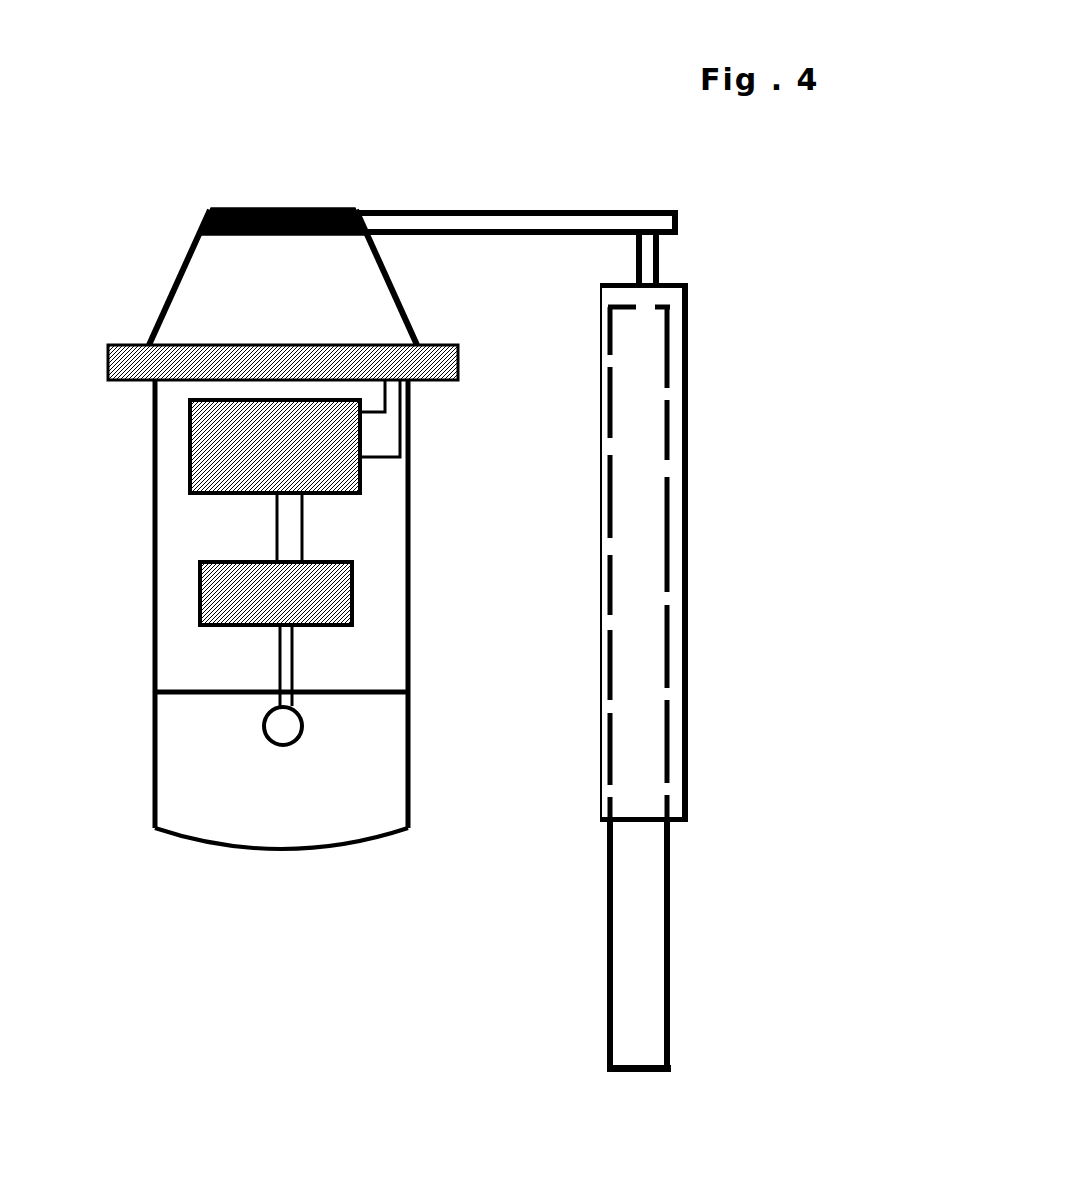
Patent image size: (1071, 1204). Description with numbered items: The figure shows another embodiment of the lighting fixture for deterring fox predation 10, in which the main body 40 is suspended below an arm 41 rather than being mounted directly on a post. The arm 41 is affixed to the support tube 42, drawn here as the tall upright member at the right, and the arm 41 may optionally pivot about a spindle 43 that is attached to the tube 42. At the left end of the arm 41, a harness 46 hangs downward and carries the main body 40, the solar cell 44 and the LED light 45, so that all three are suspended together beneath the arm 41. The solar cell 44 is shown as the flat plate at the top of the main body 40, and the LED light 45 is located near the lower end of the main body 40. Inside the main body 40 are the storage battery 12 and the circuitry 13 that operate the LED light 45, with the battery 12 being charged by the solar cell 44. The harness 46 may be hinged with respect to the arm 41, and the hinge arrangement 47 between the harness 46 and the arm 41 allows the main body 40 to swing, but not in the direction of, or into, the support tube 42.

The lighting fixture for deterring fox predation 10 is at (467, 85).
The storage battery 12 is at (330, 493).
The circuitry 13 is at (352, 585).
The main body 40 is at (152, 543).
The arm 41 is at (475, 207).
The support tube 42 is at (688, 403).
The spindle 43 is at (660, 257).
The solar cell 44 is at (133, 381).
The LED light 45 is at (283, 747).
The harness 46 is at (168, 296).
The hinge arrangement 47 is at (287, 208).